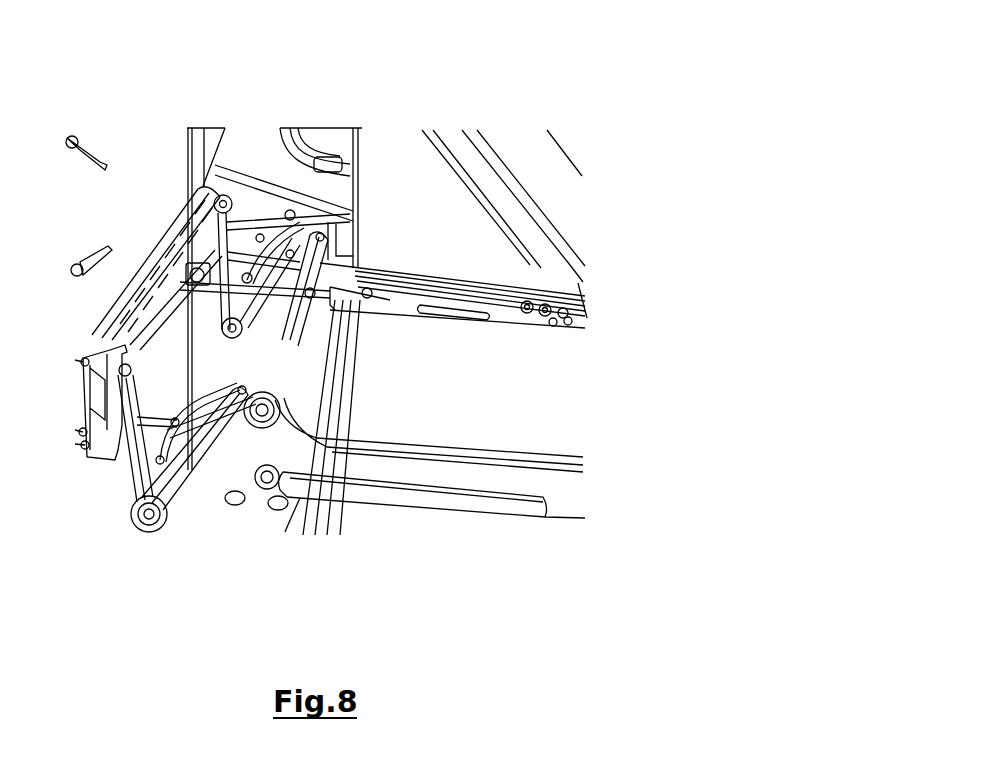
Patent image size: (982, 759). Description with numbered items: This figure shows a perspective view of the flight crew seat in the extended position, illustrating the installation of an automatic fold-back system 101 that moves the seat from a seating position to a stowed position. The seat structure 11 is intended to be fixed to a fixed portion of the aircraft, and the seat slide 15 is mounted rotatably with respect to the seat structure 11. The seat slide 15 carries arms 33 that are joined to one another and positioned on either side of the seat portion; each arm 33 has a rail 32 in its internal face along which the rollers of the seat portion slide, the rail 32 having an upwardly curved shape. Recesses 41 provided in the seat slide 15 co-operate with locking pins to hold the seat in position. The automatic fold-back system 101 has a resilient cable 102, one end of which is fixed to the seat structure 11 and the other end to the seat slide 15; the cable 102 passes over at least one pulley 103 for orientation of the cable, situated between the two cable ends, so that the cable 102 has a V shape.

The seat structure 11 is at (270, 156).
The seat slide 15 is at (407, 470).
The rail 32 is at (431, 290).
The arm 33 is at (385, 300).
The recess 41 is at (529, 303).
The automatic fold-back system 101 is at (112, 477).
The resilient cable 102 is at (227, 242).
The pulley 103 is at (140, 513).